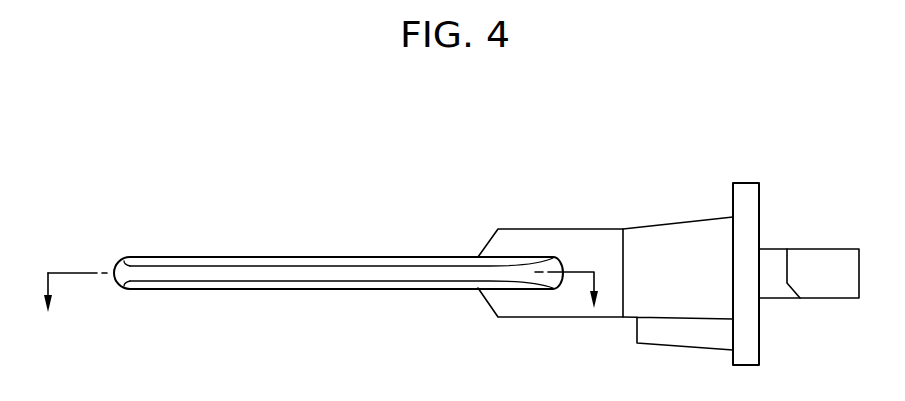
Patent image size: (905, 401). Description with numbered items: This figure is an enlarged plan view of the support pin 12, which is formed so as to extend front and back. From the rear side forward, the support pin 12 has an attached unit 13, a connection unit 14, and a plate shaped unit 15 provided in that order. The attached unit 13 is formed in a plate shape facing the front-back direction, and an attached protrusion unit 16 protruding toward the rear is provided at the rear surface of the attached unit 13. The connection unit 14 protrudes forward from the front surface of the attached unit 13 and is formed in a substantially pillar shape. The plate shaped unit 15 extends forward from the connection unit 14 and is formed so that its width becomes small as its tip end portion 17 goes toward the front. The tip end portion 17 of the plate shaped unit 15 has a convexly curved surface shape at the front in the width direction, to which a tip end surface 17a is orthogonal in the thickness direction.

The support pin 12 is at (113, 111).
The attached unit 13 is at (747, 192).
The connection unit 14 is at (572, 238).
The plate shaped unit 15 is at (275, 258).
The attached protrusion unit 16 is at (818, 290).
The tip end portion 17 is at (120, 260).
The tip end surface 17a is at (114, 270).